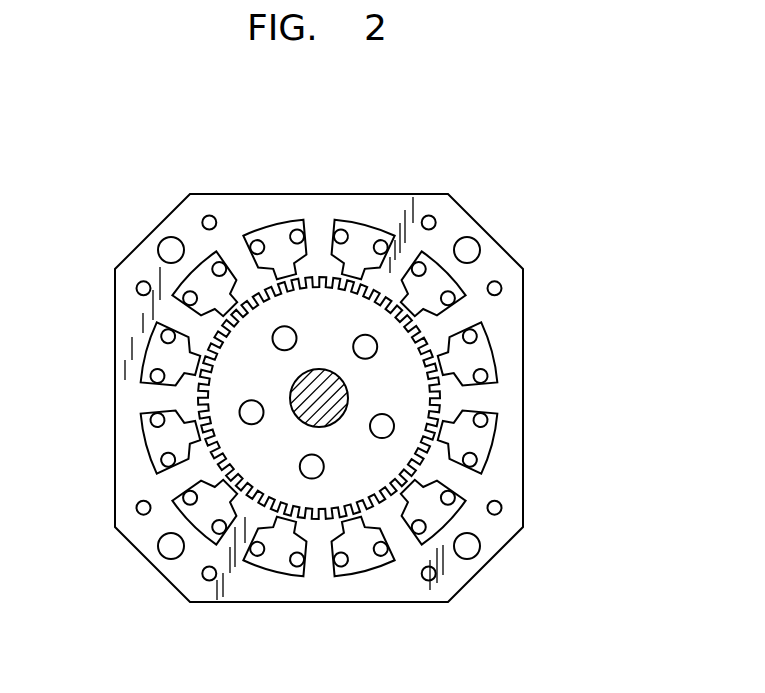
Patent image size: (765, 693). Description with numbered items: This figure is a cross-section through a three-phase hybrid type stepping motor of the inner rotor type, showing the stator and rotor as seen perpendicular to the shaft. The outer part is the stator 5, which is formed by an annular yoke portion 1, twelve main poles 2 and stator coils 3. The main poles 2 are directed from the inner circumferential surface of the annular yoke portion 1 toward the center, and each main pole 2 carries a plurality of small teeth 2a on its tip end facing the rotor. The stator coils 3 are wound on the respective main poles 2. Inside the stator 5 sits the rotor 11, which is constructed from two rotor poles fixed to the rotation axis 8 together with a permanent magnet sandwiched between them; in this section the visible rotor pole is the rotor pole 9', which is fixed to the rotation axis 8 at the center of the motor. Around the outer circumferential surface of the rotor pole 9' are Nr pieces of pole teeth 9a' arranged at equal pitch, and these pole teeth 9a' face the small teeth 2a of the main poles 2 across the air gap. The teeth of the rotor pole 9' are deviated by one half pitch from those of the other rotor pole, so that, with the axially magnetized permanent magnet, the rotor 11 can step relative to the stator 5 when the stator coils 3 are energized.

The annular yoke portion 1 is at (319, 338).
The main poles 2 is at (319, 355).
The small teeth 2a is at (297, 276).
The stator coils 3 is at (320, 224).
The stator 5 is at (431, 188).
The rotation axis 8 is at (325, 399).
The rotor pole 9' is at (397, 398).
The pole teeth 9a' is at (397, 398).
The rotor 11 is at (475, 397).